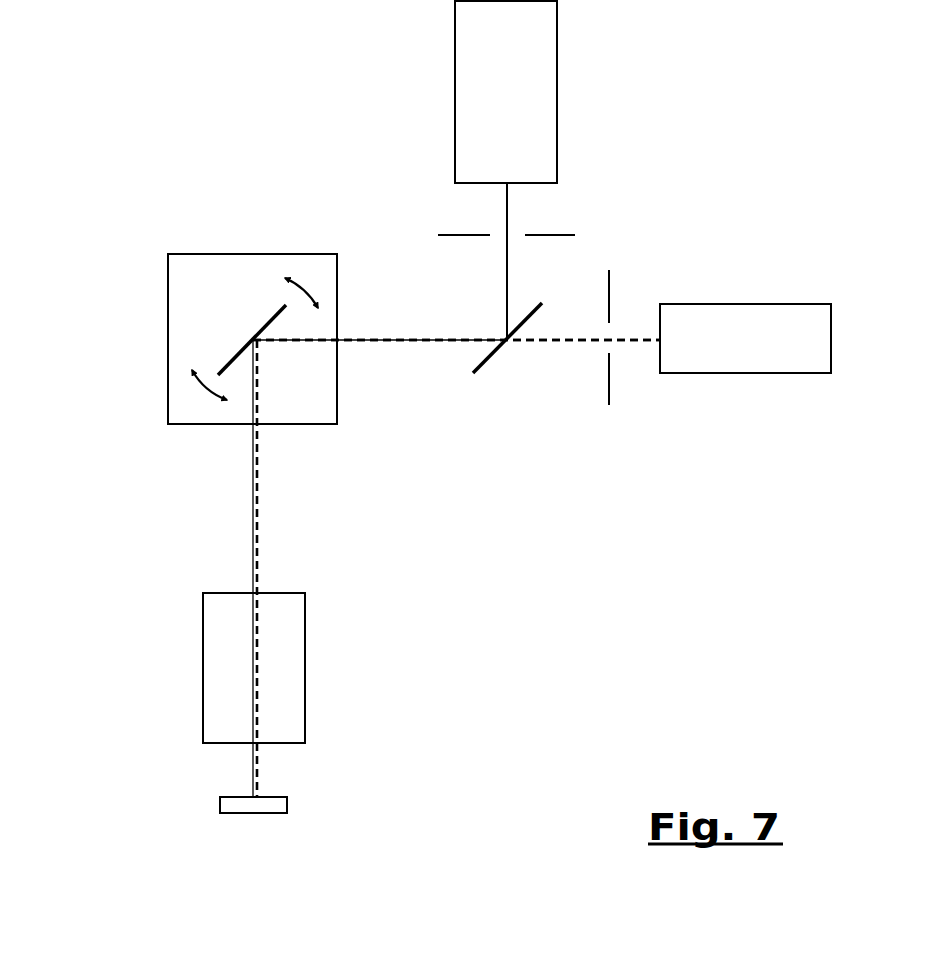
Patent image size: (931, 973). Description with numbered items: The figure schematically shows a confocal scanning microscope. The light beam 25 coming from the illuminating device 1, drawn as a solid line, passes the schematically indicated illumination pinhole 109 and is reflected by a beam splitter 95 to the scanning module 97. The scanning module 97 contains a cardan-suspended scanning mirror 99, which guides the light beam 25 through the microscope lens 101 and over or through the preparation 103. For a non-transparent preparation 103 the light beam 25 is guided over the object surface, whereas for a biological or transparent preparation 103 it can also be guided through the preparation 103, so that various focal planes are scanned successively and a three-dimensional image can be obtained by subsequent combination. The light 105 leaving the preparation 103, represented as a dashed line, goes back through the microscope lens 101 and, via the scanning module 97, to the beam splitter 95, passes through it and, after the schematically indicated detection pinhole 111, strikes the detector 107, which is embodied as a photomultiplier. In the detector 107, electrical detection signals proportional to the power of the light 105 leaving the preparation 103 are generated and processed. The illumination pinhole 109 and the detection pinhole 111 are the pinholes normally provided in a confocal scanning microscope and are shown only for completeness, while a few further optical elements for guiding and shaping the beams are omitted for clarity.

The illuminating device 1 is at (538, 98).
The light beam 25 is at (507, 270).
The beam splitter 95 is at (510, 346).
The scanning module 97 is at (185, 323).
The scanning mirror 99 is at (265, 322).
The microscope lens 101 is at (218, 660).
The preparation 103 is at (238, 798).
The light leaving the preparation 105 is at (558, 338).
The detector 107 is at (762, 323).
The illumination pinhole 109 is at (557, 235).
The detection pinhole 111 is at (609, 390).